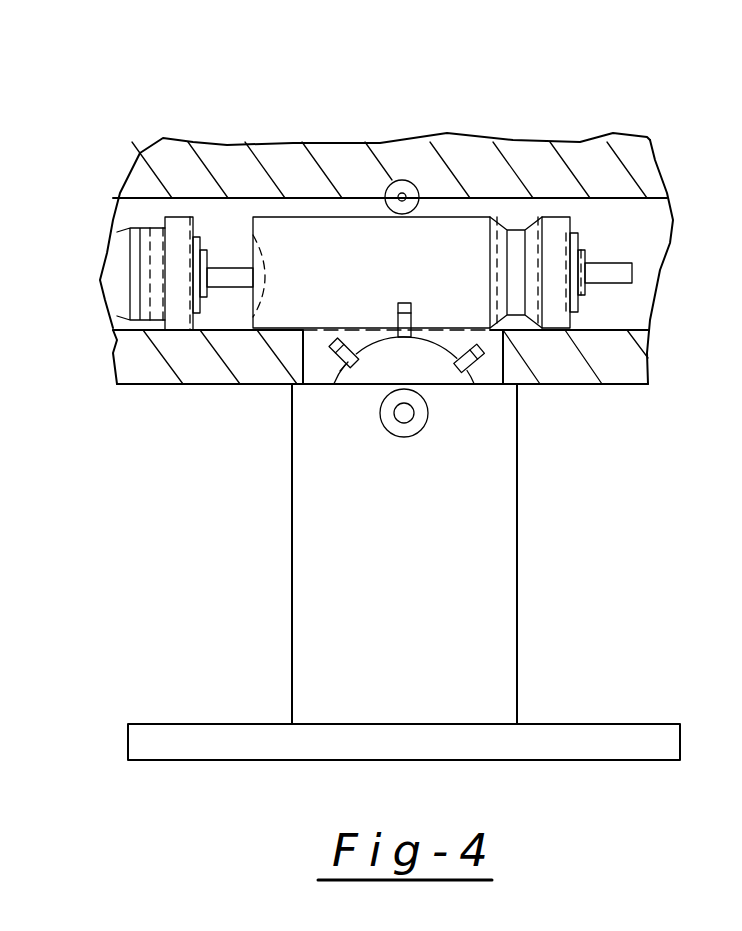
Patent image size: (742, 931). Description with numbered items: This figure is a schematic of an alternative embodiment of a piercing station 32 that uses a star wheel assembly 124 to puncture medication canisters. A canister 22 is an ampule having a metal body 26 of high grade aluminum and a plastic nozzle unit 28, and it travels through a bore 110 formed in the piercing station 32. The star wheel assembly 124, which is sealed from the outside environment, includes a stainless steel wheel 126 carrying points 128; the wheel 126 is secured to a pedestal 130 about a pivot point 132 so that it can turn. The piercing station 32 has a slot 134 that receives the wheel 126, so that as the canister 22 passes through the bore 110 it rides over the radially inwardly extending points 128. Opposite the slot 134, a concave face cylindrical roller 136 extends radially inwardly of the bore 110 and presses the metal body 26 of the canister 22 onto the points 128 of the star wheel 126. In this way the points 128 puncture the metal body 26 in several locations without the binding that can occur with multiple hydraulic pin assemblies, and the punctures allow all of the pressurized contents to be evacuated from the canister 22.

The canister 22 is at (221, 225).
The metal body 26 is at (292, 227).
The plastic nozzle unit 28 is at (617, 268).
The piercing station 32 is at (135, 352).
The bore 110 is at (215, 315).
The star wheel assembly 124 is at (274, 427).
The wheel 126 is at (392, 360).
The points 128 is at (404, 305).
The pedestal 130 is at (422, 546).
The pivot point 132 is at (413, 413).
The slot 134 is at (323, 363).
The concave face cylindrical roller 136 is at (404, 180).